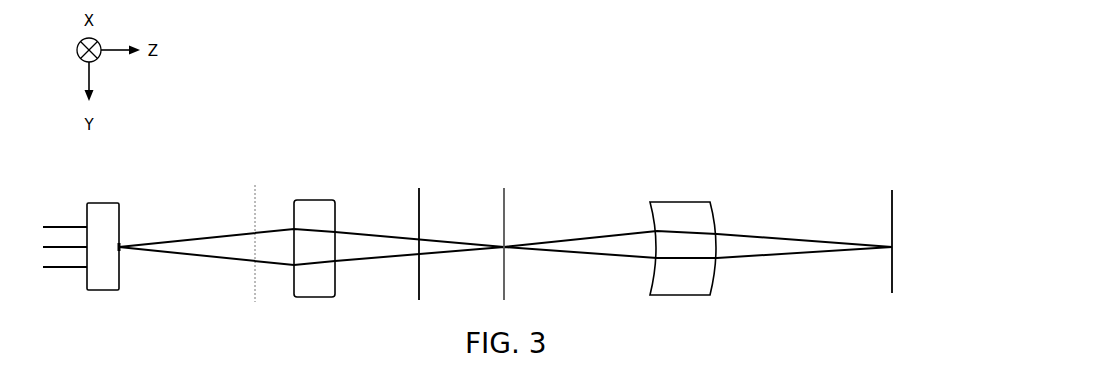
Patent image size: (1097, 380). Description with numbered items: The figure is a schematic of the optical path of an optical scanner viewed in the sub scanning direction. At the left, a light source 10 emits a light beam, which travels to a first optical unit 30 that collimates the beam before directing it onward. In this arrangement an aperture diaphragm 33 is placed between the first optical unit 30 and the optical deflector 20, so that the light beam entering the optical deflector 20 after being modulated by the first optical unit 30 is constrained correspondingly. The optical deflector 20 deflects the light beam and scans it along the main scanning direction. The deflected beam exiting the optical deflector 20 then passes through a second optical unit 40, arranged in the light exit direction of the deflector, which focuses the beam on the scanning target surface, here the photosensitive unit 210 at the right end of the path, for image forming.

The light source 10 is at (108, 218).
The first optical unit 30 is at (315, 215).
The aperture diaphragm 33 is at (423, 218).
The optical deflector 20 is at (506, 218).
The second optical unit 40 is at (697, 215).
The photosensitive unit 210 is at (897, 217).